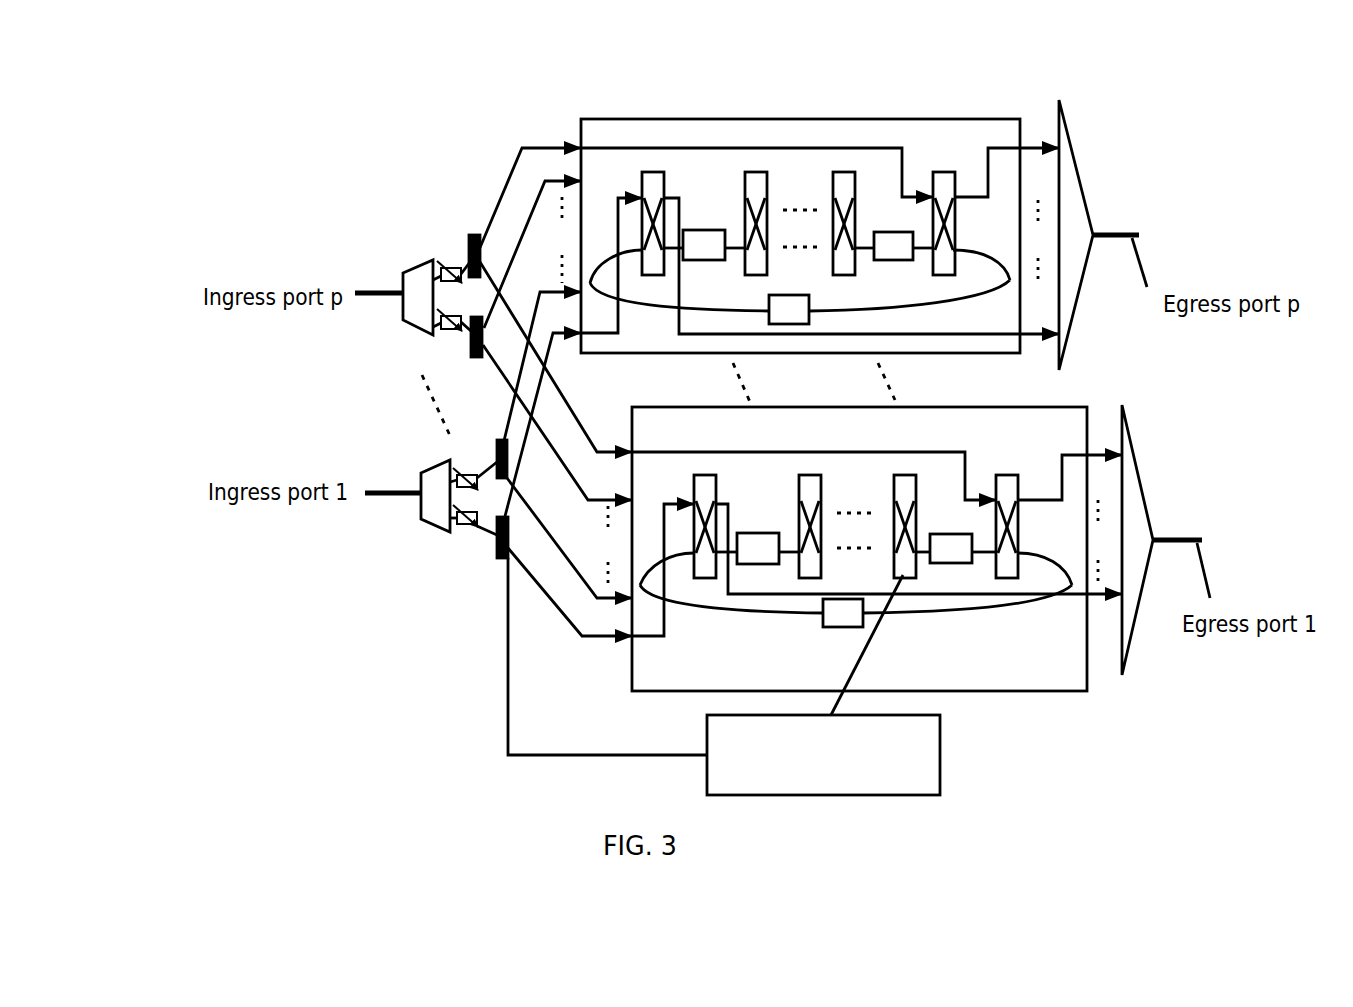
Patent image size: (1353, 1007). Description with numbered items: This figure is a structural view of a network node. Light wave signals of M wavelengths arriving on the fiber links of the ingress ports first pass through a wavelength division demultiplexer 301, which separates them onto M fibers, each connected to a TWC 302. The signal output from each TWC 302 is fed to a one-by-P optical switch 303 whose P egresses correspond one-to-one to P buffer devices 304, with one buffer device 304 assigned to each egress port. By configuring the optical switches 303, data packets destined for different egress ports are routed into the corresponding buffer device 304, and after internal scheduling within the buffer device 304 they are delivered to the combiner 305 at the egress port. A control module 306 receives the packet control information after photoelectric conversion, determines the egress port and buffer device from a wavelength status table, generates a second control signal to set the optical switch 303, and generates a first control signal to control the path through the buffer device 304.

The wavelength division demultiplexer 301 is at (422, 518).
The TWC 302 is at (472, 530).
The 1×P optical switch 303 is at (502, 558).
The buffer device 304 is at (867, 73).
The combiner 305 is at (1140, 610).
The control module 306 is at (943, 753).